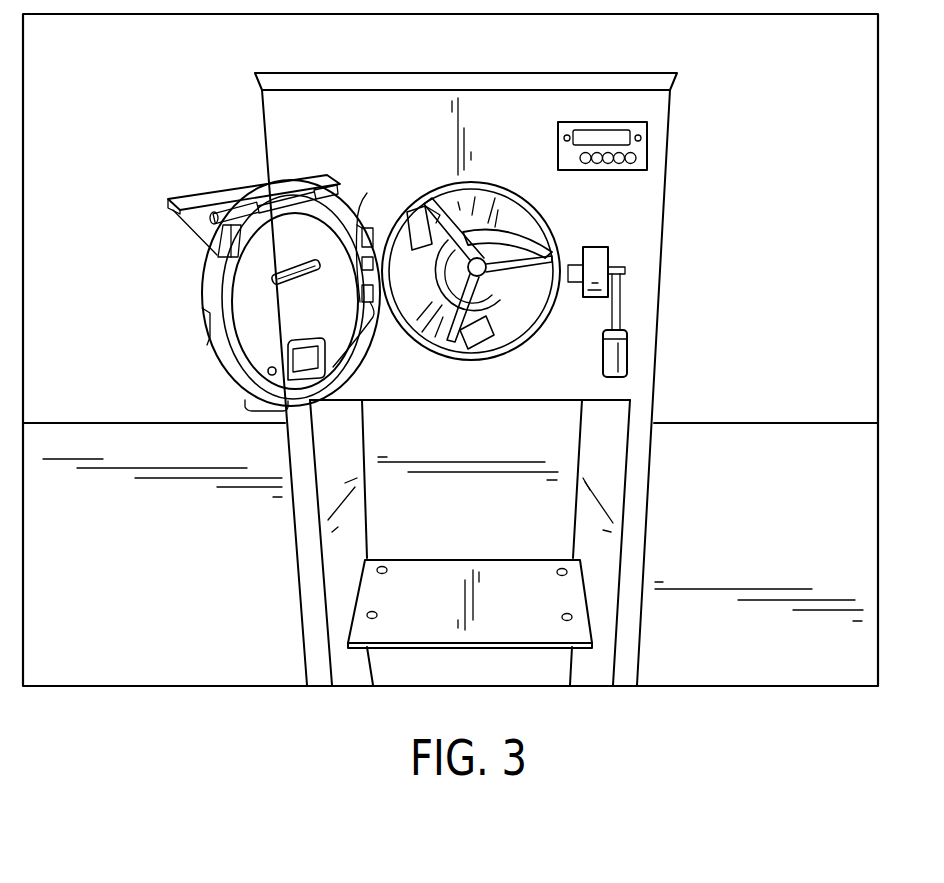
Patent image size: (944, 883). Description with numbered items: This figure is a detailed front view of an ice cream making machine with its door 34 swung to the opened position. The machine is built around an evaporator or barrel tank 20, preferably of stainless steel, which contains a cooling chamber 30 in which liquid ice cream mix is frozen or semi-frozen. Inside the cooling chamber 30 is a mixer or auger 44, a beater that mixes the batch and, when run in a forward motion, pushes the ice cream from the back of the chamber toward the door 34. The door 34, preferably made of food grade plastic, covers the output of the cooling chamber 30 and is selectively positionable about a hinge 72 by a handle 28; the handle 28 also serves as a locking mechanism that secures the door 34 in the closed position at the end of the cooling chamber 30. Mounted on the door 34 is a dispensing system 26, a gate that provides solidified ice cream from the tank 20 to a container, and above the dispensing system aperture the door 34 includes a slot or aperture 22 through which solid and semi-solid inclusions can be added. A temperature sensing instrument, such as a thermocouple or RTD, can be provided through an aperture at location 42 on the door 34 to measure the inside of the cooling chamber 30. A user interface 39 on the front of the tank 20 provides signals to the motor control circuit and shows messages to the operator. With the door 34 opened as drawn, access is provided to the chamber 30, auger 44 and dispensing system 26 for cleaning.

The evaporator or barrel tank 20 is at (647, 517).
The slot or aperture 22 is at (273, 288).
The dispensing system 26 is at (287, 353).
The handle 28 is at (620, 300).
The cooling chamber 30 is at (484, 287).
The door 34 is at (280, 284).
The user interface 39 is at (602, 172).
The location for temperature sensing instrument 42 is at (267, 370).
The mixer or auger 44 is at (450, 300).
The hinge 72 is at (367, 193).